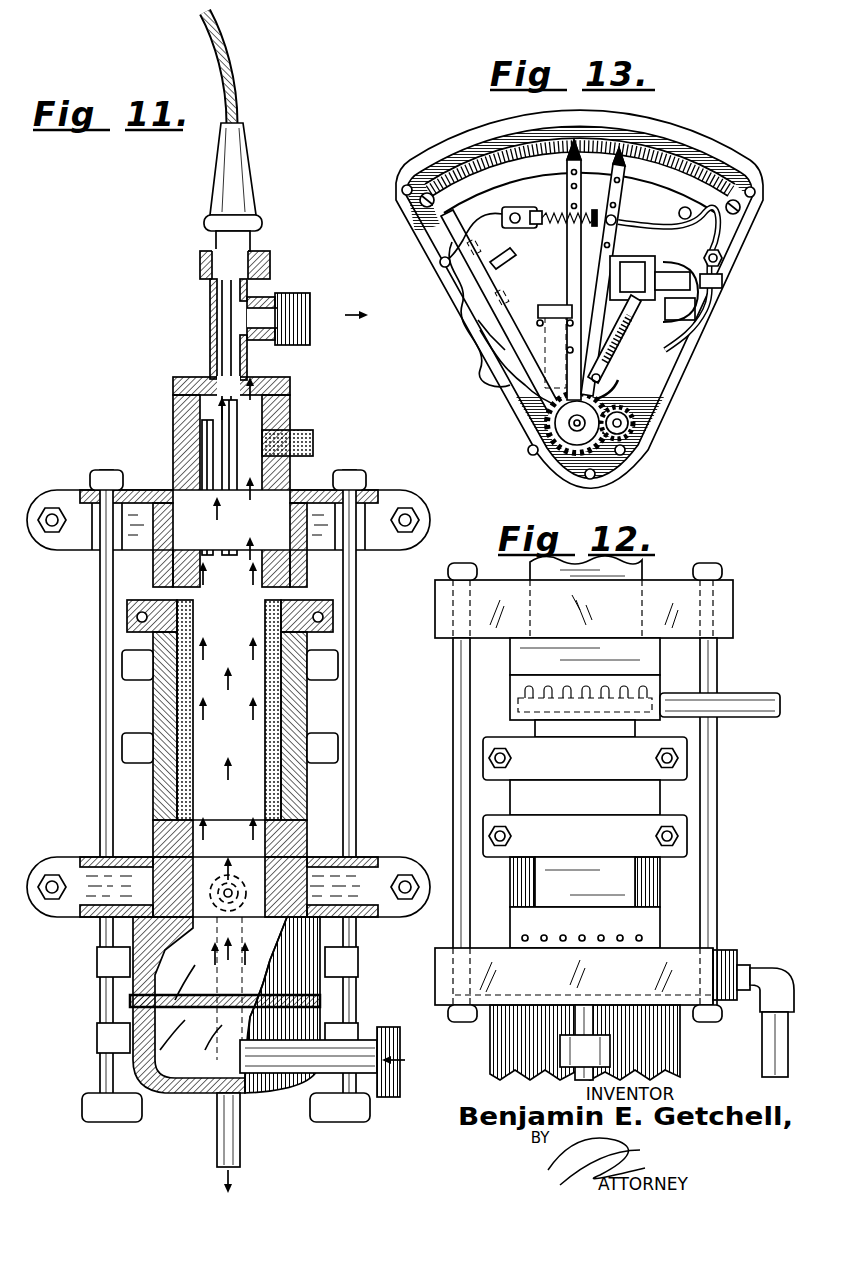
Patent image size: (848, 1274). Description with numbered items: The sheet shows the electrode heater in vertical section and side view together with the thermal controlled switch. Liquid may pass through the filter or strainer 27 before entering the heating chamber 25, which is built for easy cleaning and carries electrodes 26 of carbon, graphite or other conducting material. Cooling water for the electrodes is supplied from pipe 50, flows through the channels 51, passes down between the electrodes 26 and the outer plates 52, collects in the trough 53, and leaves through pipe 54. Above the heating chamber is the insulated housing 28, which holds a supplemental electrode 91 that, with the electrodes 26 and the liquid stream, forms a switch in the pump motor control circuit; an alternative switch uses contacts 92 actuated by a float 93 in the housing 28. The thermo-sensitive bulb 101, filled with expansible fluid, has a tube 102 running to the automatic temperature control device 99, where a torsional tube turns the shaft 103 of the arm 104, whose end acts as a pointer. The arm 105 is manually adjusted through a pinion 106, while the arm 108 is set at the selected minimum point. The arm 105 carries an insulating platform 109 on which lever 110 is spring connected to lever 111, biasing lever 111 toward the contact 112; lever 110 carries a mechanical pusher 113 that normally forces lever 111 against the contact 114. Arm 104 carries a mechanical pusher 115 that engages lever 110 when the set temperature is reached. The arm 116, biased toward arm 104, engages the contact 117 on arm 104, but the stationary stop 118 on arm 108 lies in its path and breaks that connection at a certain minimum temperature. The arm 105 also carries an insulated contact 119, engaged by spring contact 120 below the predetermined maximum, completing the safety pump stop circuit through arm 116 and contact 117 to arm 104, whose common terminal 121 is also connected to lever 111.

In FIG. 11, the heating chamber 25 is at (205, 796).
In FIG. 12, the heating chamber 25 is at (612, 824).
In FIG. 11, the electrodes 26 is at (270, 652).
In FIG. 11, the filter or strainer 27 is at (170, 1010).
In FIG. 11, the insulated housing 28 is at (186, 423).
In FIG. 12, the insulated housing 28 is at (538, 568).
In FIG. 12, the pipe 50 is at (738, 700).
In FIG. 11, the channels 51 is at (140, 616).
In FIG. 12, the channels 51 is at (522, 702).
In FIG. 11, the outer plates 52 is at (166, 797).
In FIG. 12, the outer plates 52 is at (585, 813).
In FIG. 11, the trough 53 is at (122, 882).
In FIG. 12, the trough 53 is at (690, 968).
In FIG. 11, the pipe 54 is at (222, 1143).
In FIG. 12, the pipe 54 is at (768, 1060).
In FIG. 11, the supplemental electrode 91 is at (300, 440).
In FIG. 11, the contacts 92 is at (235, 320).
In FIG. 11, the float 93 is at (206, 460).
In FIG. 13, the automatic temperature control device 99 is at (579, 299).
In FIG. 11, the bulb 101 is at (240, 480).
In FIG. 11, the tube 102 is at (222, 297).
In FIG. 13, the shaft 103 is at (548, 428).
In FIG. 13, the arm 104 is at (430, 228).
In FIG. 13, the arm 105 is at (616, 172).
In FIG. 13, the pinion 106 is at (635, 430).
In FIG. 13, the arm 108 is at (566, 178).
In FIG. 13, the insulating platform or plate 109 is at (636, 366).
In FIG. 13, the lever 110 is at (724, 259).
In FIG. 13, the lever 111 is at (620, 328).
In FIG. 13, the contact 112 is at (690, 283).
In FIG. 13, the mechanical pusher 113 is at (690, 316).
In FIG. 13, the contact 114 is at (612, 290).
In FIG. 13, the mechanical pusher 115 is at (504, 265).
In FIG. 13, the arm 116 is at (482, 328).
In FIG. 13, the contact 117 is at (490, 298).
In FIG. 13, the stationary stop 118 is at (486, 318).
In FIG. 13, the contact 119 is at (614, 218).
In FIG. 13, the spring contact 120 is at (590, 213).
In FIG. 13, the common terminal 121 is at (722, 281).